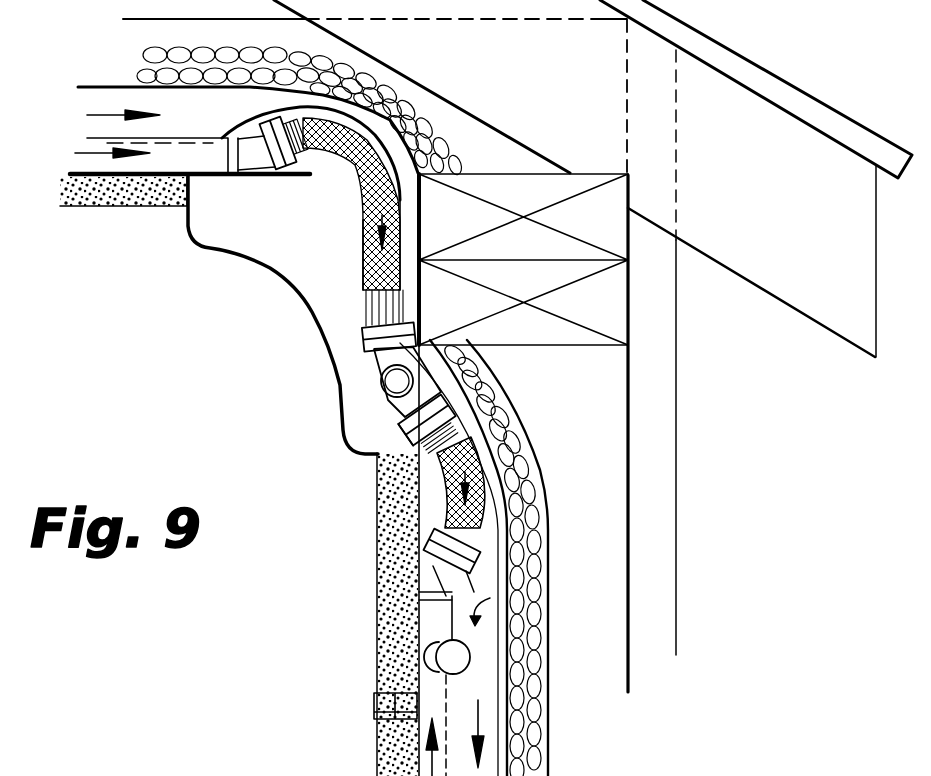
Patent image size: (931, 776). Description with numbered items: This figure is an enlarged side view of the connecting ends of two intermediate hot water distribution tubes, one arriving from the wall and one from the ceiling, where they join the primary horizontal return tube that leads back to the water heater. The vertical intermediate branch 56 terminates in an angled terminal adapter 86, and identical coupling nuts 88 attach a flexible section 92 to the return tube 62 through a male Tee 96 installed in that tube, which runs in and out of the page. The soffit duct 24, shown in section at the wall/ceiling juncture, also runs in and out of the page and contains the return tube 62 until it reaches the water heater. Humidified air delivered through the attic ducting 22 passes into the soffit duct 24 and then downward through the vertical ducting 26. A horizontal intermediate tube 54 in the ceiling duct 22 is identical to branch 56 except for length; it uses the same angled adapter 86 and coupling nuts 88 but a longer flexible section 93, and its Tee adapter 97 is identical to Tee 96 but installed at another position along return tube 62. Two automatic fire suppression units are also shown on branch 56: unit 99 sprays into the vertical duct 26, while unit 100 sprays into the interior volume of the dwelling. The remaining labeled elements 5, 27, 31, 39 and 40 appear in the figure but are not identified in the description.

The roof rafter board 5 is at (737, 48).
The attic ducting 22 is at (130, 97).
The soffit duct 24 is at (250, 250).
The vertical ducting 26 is at (487, 617).
The insulation 27 is at (433, 115).
The wall 31 is at (672, 470).
The masonry wall 39 is at (378, 627).
The conduit pipe 40 is at (371, 294).
The horizontal intermediate tube 54 is at (187, 152).
The intermediate branch 56 is at (428, 620).
The return tube 62 is at (400, 405).
The angled terminal adapter 86 is at (262, 157).
The coupling nuts 88 is at (270, 120).
The flexible section 92 is at (472, 488).
The longer flexible section 93 is at (362, 203).
The male Tee 96 is at (405, 432).
The Tee adapter 97 is at (396, 382).
The fire suppression unit 99 is at (463, 657).
The fire suppression unit 100 is at (373, 703).